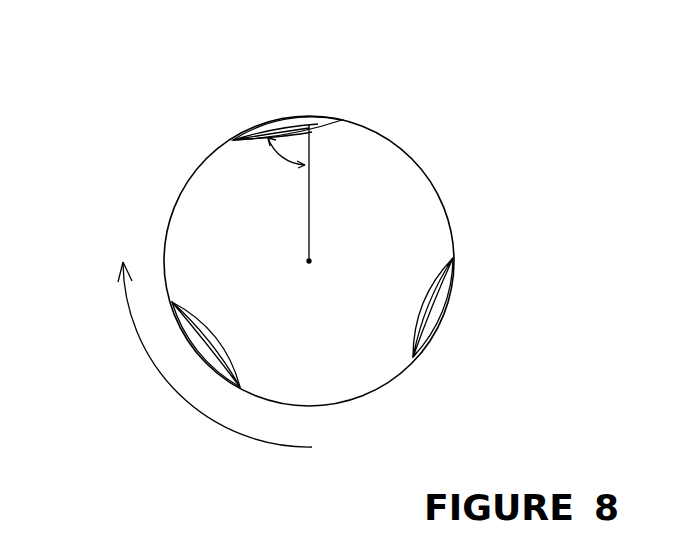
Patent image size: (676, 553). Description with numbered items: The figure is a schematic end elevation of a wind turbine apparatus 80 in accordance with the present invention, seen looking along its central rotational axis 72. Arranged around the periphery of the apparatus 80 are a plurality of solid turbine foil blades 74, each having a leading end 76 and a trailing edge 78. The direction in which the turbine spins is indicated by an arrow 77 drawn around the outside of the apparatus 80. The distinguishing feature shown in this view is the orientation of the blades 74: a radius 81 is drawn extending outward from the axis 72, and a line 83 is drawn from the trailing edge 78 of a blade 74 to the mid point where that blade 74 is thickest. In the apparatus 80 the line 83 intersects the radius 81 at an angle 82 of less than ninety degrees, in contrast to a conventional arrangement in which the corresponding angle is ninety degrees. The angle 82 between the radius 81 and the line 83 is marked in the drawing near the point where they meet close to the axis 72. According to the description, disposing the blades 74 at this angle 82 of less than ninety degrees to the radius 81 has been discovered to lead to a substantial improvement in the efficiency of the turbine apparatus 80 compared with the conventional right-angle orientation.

The central rotational axis 72 is at (309, 261).
The solid turbine foil blades 74 is at (318, 118).
The leading end 76 is at (413, 360).
The arrow 77 is at (145, 347).
The trailing edge 78 is at (455, 258).
The wind turbine apparatus 80 is at (448, 135).
The radius 81 is at (309, 202).
The angle between reference line and pocket 82 is at (275, 160).
The line 83 is at (285, 130).